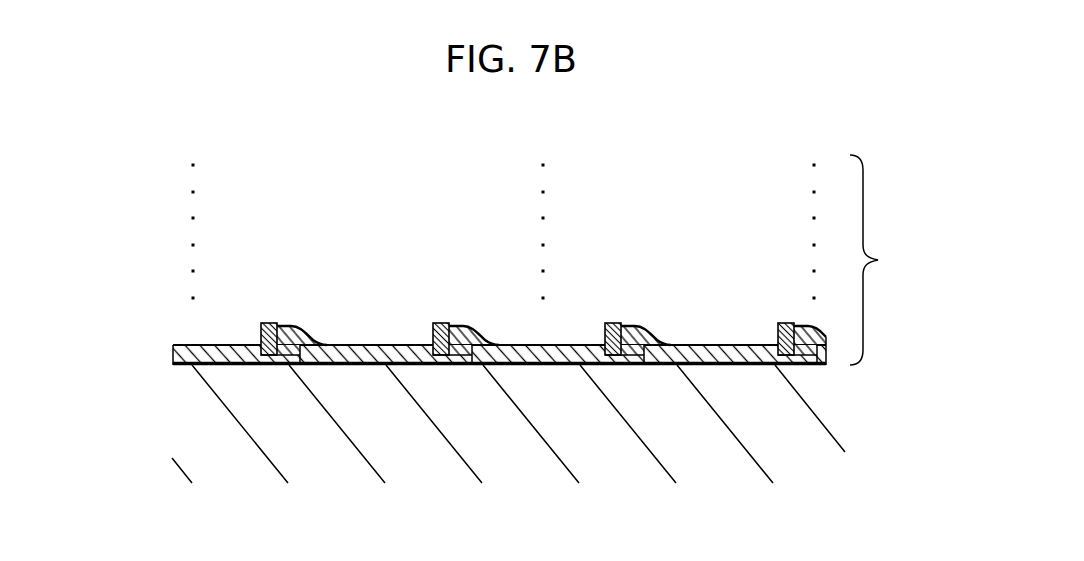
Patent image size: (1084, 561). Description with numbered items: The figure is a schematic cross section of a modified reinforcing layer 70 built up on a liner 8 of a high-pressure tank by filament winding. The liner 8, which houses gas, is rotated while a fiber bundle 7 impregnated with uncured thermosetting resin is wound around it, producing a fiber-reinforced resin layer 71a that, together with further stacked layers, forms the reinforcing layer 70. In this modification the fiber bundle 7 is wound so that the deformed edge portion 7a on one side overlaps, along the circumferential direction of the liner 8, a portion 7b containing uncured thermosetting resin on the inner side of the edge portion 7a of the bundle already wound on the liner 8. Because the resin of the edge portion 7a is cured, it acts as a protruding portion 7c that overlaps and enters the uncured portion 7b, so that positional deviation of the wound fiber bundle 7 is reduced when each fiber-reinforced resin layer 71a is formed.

The fiber bundle 7 is at (342, 352).
The deformed edge portion 7a is at (260, 324).
The portion including the uncured thermosetting resin 7b is at (355, 344).
The protruding portion 7c is at (269, 323).
The reinforcing layer 70 is at (879, 260).
The fiber-reinforced resin layer 71a is at (173, 362).
The liner 8 is at (818, 410).